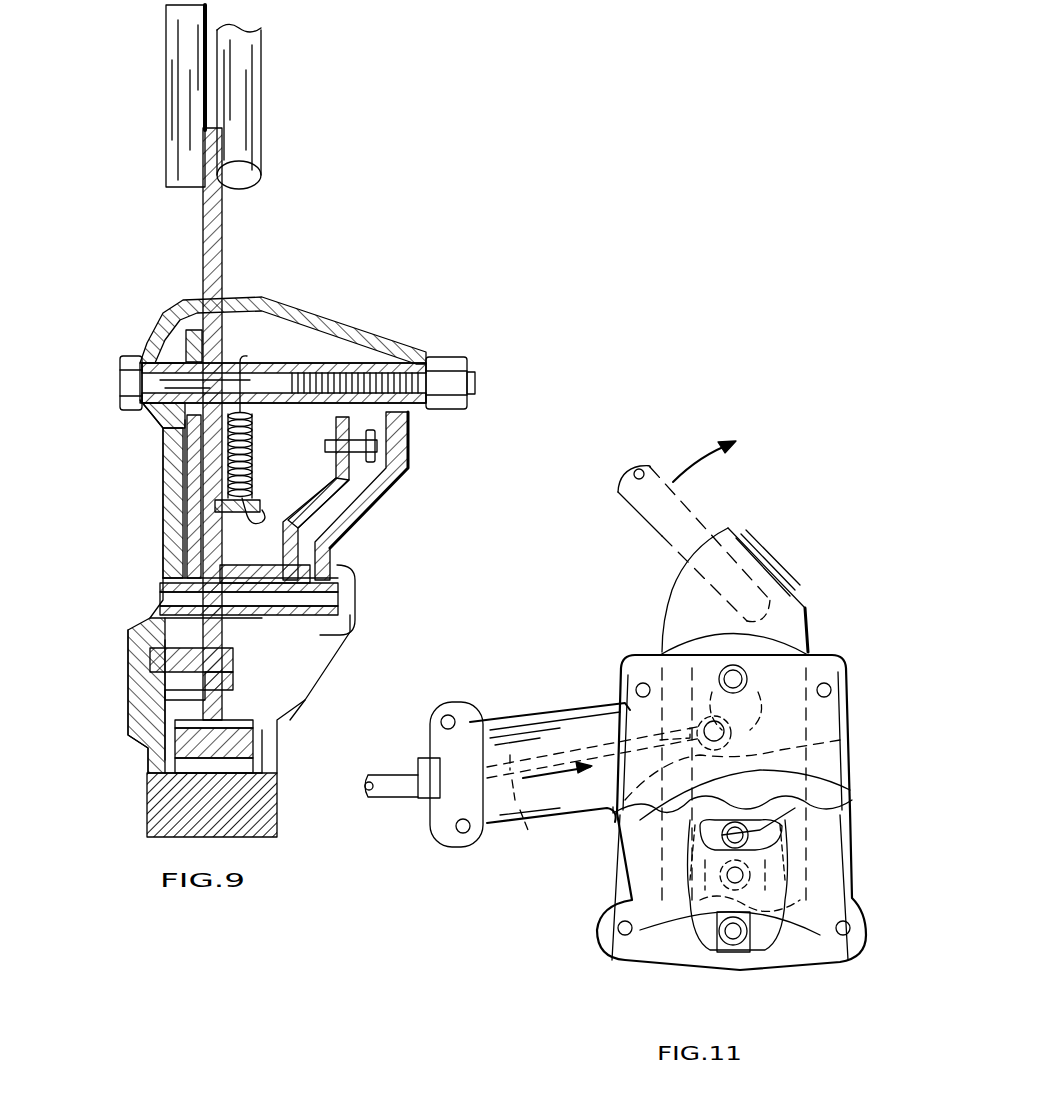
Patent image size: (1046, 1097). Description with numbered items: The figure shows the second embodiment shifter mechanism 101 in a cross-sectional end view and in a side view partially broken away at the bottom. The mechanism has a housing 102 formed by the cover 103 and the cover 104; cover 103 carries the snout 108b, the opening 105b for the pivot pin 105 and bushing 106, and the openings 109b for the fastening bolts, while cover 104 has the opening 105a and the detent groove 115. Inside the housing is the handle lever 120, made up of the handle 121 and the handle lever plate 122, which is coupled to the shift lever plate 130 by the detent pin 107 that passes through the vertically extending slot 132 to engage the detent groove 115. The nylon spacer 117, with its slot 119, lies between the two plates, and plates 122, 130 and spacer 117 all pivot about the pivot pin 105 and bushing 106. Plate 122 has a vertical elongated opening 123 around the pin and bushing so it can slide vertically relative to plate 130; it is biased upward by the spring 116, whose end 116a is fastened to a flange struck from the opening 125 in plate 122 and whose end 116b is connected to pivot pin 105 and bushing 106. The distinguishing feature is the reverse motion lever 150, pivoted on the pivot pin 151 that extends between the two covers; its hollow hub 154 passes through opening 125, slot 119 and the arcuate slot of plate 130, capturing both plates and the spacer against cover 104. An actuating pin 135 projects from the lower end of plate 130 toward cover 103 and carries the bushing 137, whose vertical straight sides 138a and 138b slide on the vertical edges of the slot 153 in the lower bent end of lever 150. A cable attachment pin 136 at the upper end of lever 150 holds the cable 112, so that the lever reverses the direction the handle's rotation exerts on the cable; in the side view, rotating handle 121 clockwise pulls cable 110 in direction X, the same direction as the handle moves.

In FIG. 9, the shifter mechanism 101 is at (335, 296).
In FIG. 9, the housing 102 is at (362, 526).
In FIG. 9, the cover 103 is at (248, 298).
In FIG. 11, the cover 103 is at (818, 728).
In FIG. 9, the cover 104 is at (142, 408).
In FIG. 11, the cover 104 is at (650, 845).
In FIG. 9, the pivot pin 105 is at (283, 347).
In FIG. 11, the pivot pin 105 is at (725, 668).
In FIG. 9, the opening 105a is at (130, 357).
In FIG. 9, the opening 105b is at (432, 357).
In FIG. 9, the bushing 106 is at (378, 446).
In FIG. 11, the bushing 106 is at (737, 658).
In FIG. 9, the detent pin 107 is at (150, 662).
In FIG. 11, the detent pin 107 is at (720, 842).
In FIG. 11, the snout 108b is at (512, 728).
In FIG. 11, the openings 109b is at (638, 686).
In FIG. 11, the cable 110 is at (528, 745).
In FIG. 11, the cable 112 is at (395, 790).
In FIG. 9, the detent groove 115 is at (160, 706).
In FIG. 9, the spring 116 is at (272, 431).
In FIG. 9, the end of spring 116a is at (263, 515).
In FIG. 9, the end of spring 116b is at (250, 356).
In FIG. 9, the nylon spacer 117 is at (187, 462).
In FIG. 11, the slot 119 is at (838, 780).
In FIG. 9, the handle lever 120 is at (268, 222).
In FIG. 9, the handle 121 is at (260, 105).
In FIG. 11, the handle 121 is at (678, 503).
In FIG. 9, the handle lever plate 122 is at (222, 268).
In FIG. 11, the handle lever plate 122 is at (787, 602).
In FIG. 9, the elongated opening 123 is at (204, 344).
In FIG. 11, the opening 125 is at (848, 745).
In FIG. 9, the shift lever plate 130 is at (190, 505).
In FIG. 11, the shift lever plate 130 is at (815, 642).
In FIG. 9, the slot 132 is at (168, 697).
In FIG. 9, the actuating pin 135 is at (253, 746).
In FIG. 9, the cable attachment pin 136 is at (350, 462).
In FIG. 11, the cable attachment pin 136 is at (642, 790).
In FIG. 9, the bushing 137 is at (253, 724).
In FIG. 11, the vertical straight side 138a is at (715, 945).
In FIG. 11, the vertical straight side 138b is at (746, 950).
In FIG. 9, the reverse motion lever 150 is at (343, 500).
In FIG. 11, the reverse motion lever 150 is at (775, 920).
In FIG. 9, the pivot pin 151 is at (356, 582).
In FIG. 11, the pivot pin 151 is at (800, 808).
In FIG. 9, the slot 153 is at (292, 700).
In FIG. 11, the slot 153 is at (690, 925).
In FIG. 9, the hollow hub 154 is at (223, 565).